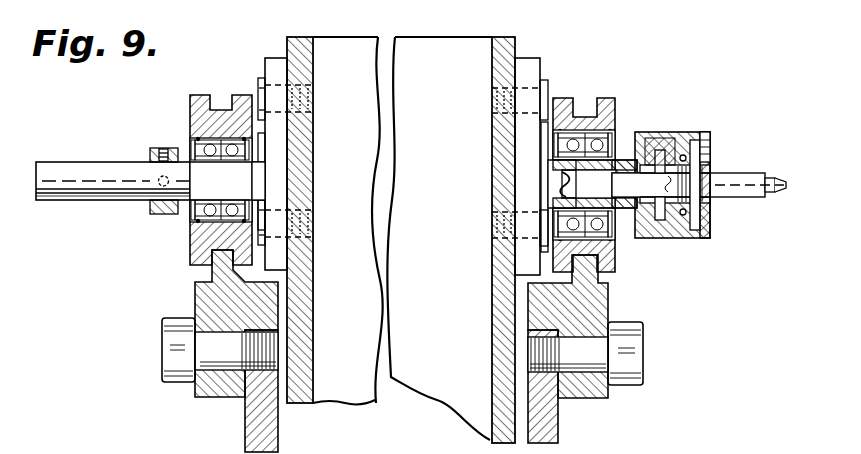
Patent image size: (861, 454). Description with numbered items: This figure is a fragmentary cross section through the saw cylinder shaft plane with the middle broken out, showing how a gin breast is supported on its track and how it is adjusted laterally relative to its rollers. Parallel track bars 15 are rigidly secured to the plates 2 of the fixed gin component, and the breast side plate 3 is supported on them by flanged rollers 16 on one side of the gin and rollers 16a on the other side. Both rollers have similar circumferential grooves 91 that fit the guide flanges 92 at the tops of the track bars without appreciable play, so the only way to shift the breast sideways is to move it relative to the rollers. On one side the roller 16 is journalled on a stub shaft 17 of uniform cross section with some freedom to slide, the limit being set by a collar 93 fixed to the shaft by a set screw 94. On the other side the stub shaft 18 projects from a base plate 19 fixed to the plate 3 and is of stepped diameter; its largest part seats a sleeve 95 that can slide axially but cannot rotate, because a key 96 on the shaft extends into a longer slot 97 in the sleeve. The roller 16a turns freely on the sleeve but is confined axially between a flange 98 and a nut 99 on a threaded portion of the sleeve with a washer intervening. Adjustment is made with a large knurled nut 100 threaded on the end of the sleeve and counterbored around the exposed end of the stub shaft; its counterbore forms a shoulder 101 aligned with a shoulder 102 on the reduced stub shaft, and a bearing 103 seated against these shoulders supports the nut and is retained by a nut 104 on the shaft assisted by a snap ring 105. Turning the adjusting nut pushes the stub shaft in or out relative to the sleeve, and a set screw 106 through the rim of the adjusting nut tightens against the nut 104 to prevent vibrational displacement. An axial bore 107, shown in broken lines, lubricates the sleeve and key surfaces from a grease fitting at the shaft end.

The plates 2 is at (250, 428).
The plates 3 is at (503, 52).
The track bars 15 is at (625, 324).
The rollers 16 is at (195, 243).
The rollers 16a is at (616, 255).
The stub shafts 17 is at (86, 188).
The stub shafts 18 is at (656, 142).
The base plates 19 is at (267, 168).
The circumferential grooves 91 is at (213, 253).
The guide flanges 92 is at (202, 286).
The collar 93 is at (152, 214).
The set screw 94 is at (164, 148).
The sleeve 95 is at (626, 162).
The key 96 is at (552, 192).
The slot 97 is at (558, 178).
The flange 98 is at (545, 166).
The nut 99 is at (619, 135).
The nut 100 is at (708, 238).
The shoulder 101 is at (665, 232).
The shoulder 102 is at (658, 190).
The bearing 103 is at (685, 240).
The nut 104 is at (708, 205).
The snap ring 105 is at (710, 222).
The set screw 106 is at (705, 135).
The axial bore 107 is at (685, 128).